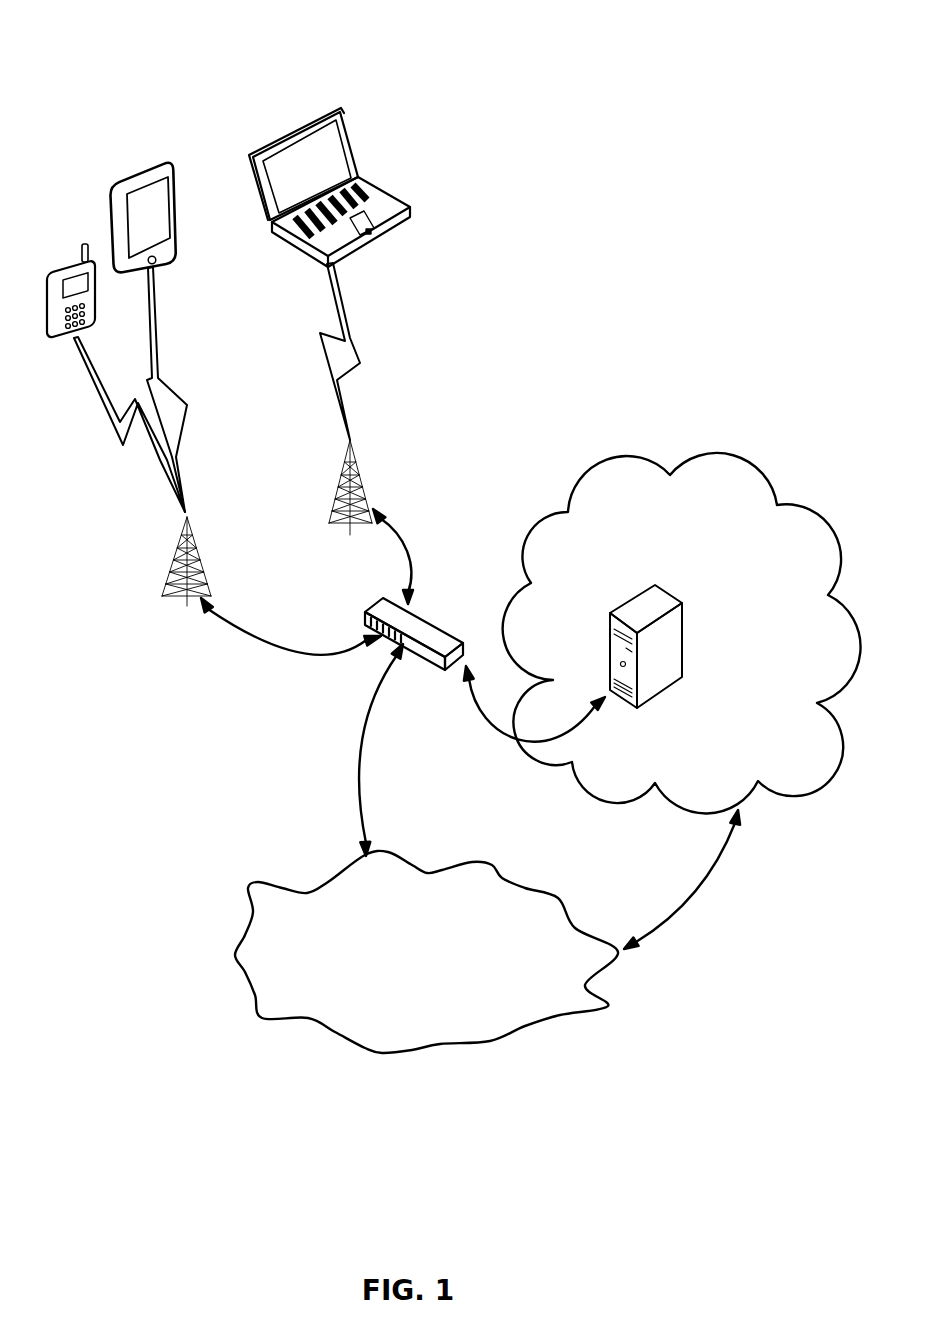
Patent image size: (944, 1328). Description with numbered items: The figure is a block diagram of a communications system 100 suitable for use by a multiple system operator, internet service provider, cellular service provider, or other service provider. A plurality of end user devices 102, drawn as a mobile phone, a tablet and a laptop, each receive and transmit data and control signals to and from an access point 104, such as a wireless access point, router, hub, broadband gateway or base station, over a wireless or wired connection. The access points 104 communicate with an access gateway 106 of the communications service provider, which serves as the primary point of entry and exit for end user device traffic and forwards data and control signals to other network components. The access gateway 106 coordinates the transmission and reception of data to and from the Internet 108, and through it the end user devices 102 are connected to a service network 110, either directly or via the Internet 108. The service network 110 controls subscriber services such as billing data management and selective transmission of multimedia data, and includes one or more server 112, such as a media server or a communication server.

The communications system 100 is at (759, 62).
The end user devices 102 is at (62, 262).
The access point 104 is at (190, 537).
The access gateway 106 is at (365, 610).
The Internet 108 is at (432, 872).
The service network 110 is at (692, 464).
The server 112 is at (683, 630).